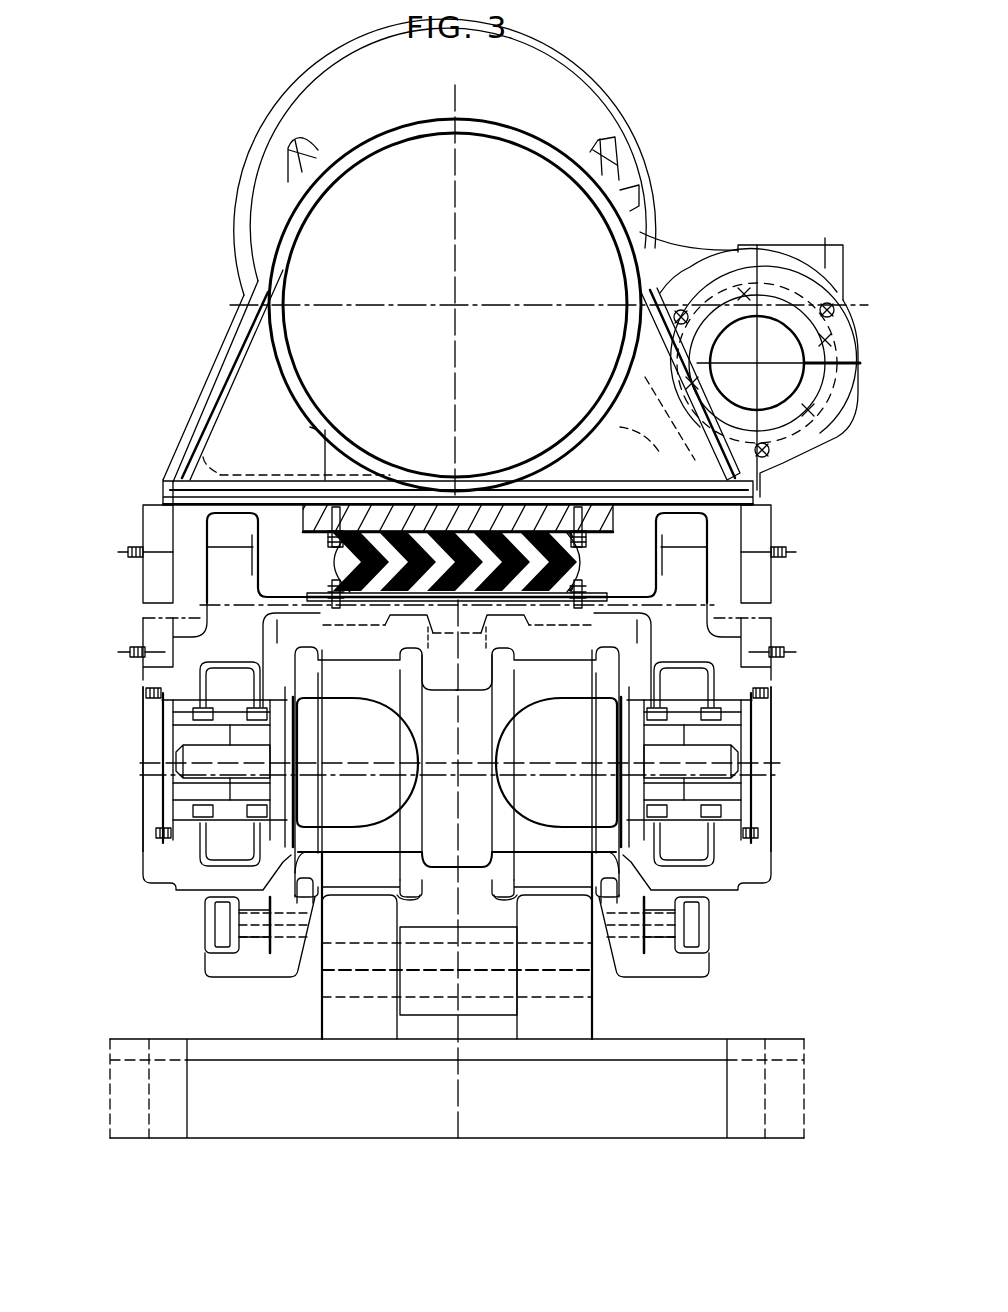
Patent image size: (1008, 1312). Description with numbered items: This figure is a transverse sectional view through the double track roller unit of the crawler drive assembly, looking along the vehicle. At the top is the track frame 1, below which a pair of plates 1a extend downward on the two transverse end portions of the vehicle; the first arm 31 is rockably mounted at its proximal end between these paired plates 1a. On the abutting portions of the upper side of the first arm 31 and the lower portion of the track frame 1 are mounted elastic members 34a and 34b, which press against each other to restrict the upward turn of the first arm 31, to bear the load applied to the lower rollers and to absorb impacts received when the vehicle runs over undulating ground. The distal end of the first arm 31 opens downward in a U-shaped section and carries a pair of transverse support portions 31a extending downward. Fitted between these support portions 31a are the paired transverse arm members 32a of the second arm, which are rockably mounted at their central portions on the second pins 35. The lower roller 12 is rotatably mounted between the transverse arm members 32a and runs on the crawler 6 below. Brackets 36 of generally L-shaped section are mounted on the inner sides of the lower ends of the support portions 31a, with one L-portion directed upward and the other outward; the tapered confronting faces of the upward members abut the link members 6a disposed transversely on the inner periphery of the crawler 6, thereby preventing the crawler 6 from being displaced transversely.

The track frame 1 is at (278, 197).
The plates 1a is at (160, 587).
The crawler 6 is at (197, 1037).
The link members 6a is at (333, 1020).
The lower roller 12 is at (338, 672).
The first arm 31 is at (230, 636).
The transverse support portions 31a is at (215, 882).
The transverse arm members 32a is at (226, 693).
The elastic member 34a is at (347, 583).
The elastic member 34b is at (347, 552).
The second pins 35 is at (190, 793).
The brackets 36 is at (217, 967).